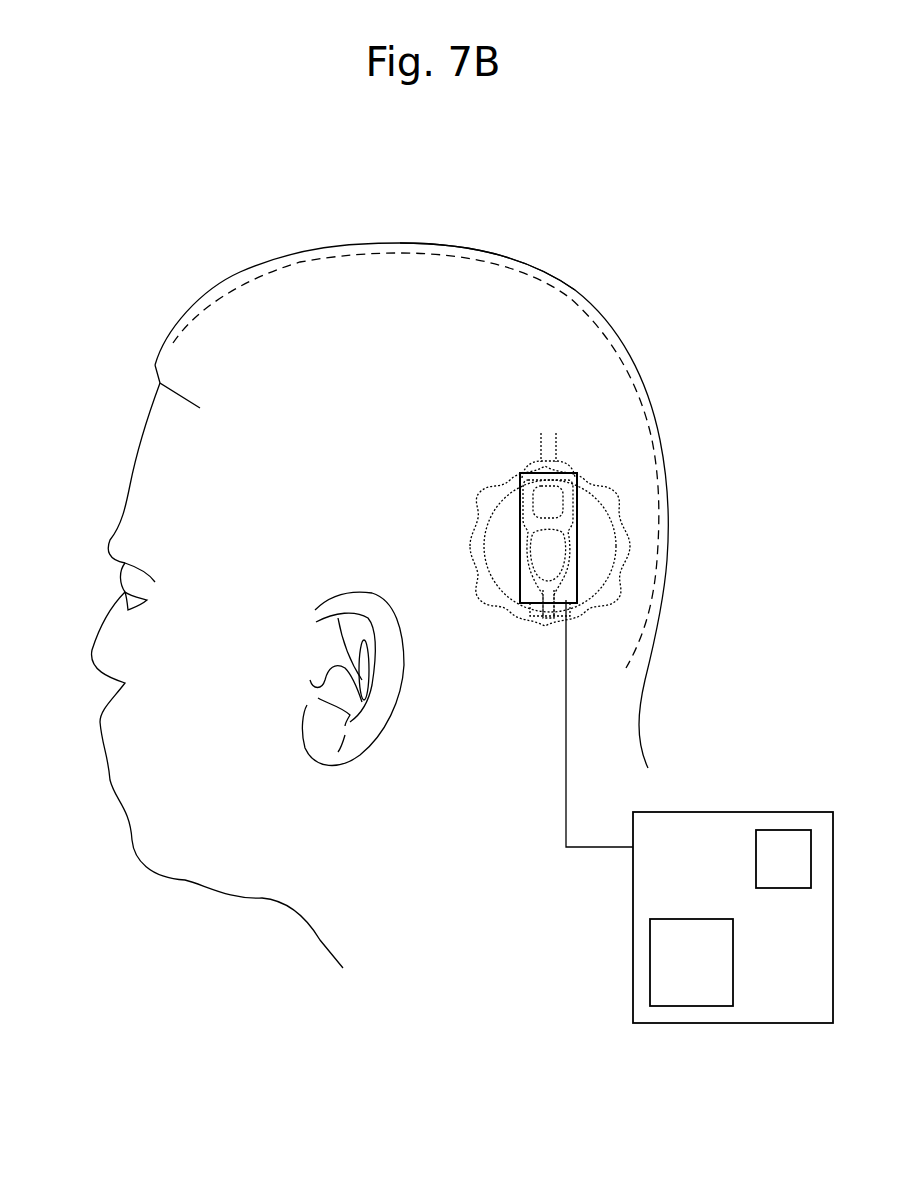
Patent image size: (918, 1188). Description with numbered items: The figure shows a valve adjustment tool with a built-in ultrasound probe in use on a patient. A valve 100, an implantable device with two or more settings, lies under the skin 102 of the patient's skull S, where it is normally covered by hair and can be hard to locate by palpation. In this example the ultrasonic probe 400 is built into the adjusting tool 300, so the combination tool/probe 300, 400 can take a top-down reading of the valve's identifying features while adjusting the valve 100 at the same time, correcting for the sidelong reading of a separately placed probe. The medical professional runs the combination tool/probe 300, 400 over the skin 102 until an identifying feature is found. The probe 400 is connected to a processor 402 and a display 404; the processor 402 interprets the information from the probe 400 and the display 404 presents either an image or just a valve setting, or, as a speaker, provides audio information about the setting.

The skull S is at (306, 265).
The skin 102 is at (557, 278).
The valve 100 is at (577, 522).
The ultrasound probe 400 is at (520, 475).
The adjusting tool 300 is at (533, 611).
The processor 402 is at (650, 936).
The display 404 is at (780, 830).